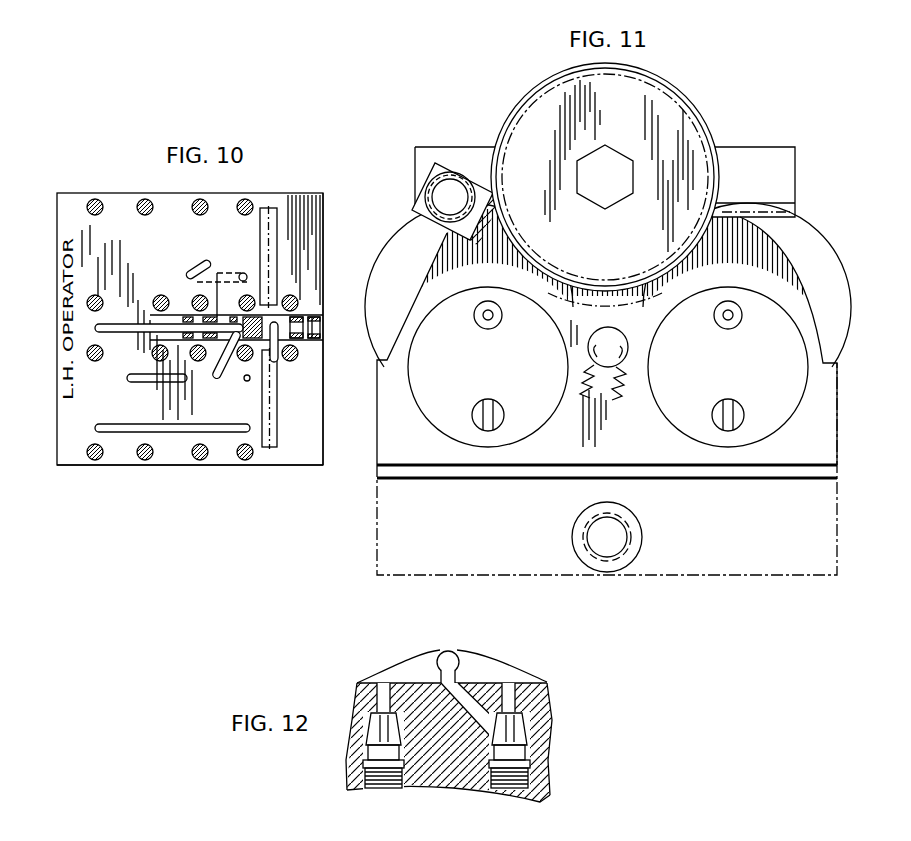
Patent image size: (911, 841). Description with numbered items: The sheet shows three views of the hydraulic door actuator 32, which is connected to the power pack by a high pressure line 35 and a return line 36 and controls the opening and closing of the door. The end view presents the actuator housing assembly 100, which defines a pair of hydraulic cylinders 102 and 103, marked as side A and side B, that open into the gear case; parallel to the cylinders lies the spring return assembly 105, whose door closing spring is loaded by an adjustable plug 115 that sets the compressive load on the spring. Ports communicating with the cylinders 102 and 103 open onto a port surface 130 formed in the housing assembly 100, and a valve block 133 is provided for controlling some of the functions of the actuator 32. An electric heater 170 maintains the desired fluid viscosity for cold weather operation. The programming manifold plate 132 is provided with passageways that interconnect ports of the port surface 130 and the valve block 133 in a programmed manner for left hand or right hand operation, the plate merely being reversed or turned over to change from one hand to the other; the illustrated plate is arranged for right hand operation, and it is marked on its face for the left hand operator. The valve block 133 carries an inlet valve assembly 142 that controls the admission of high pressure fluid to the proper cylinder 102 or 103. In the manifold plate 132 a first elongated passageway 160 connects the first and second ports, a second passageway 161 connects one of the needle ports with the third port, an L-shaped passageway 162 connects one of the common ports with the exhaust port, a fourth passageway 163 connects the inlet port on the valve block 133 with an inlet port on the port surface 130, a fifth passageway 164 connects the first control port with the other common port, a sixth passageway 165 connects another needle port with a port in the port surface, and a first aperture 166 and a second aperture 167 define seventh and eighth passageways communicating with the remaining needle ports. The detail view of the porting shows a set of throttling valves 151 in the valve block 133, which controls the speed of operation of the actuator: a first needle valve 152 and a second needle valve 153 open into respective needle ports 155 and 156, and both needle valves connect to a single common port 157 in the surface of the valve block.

In FIG. 11, the door actuator 32 is at (743, 95).
In FIG. 11, the high pressure line 35 is at (600, 549).
In FIG. 11, the return line 36 is at (425, 218).
In FIG. 11, the actuator housing assembly 100 is at (388, 450).
In FIG. 11, the hydraulic cylinder 102 is at (775, 320).
In FIG. 11, the hydraulic cylinder 103 is at (437, 322).
In FIG. 11, the spring return assembly 105 is at (718, 133).
In FIG. 11, the adjustable plug 115 is at (535, 113).
In FIG. 11, the port surface 130 is at (417, 470).
In FIG. 10, the manifold plate 132 is at (307, 447).
In FIG. 11, the manifold plate 132 is at (452, 478).
In FIG. 10, the valve block 133 is at (174, 447).
In FIG. 11, the valve block 133 is at (482, 560).
In FIG. 12, the valve block 133 is at (546, 748).
In FIG. 10, the inlet valve assembly 142 is at (306, 340).
In FIG. 12, the set of throttling valves 151 is at (530, 727).
In FIG. 12, the first needle valve 152 is at (522, 753).
In FIG. 12, the second needle valve 153 is at (363, 730).
In FIG. 12, the needle port 155 is at (509, 688).
In FIG. 12, the needle port 156 is at (383, 682).
In FIG. 12, the common port 157 is at (455, 665).
In FIG. 10, the first elongated passageway 160 is at (120, 434).
In FIG. 10, the second passageway 161 is at (141, 385).
In FIG. 10, the L-shaped passageway 162 is at (121, 333).
In FIG. 10, the fourth passageway 163 is at (278, 354).
In FIG. 10, the fifth passageway 164 is at (223, 382).
In FIG. 10, the sixth passageway 165 is at (190, 267).
In FIG. 10, the first aperture 166 is at (243, 272).
In FIG. 10, the second aperture 167 is at (251, 380).
In FIG. 11, the electric heater 170 is at (623, 340).